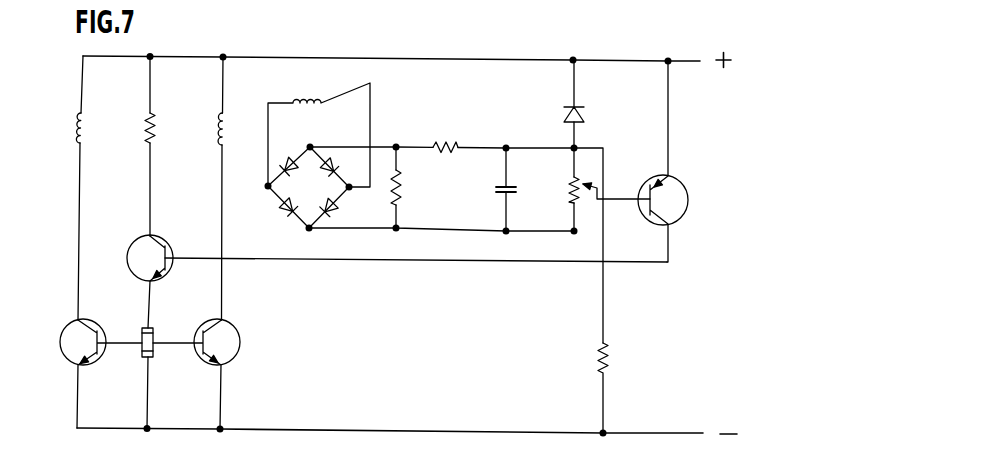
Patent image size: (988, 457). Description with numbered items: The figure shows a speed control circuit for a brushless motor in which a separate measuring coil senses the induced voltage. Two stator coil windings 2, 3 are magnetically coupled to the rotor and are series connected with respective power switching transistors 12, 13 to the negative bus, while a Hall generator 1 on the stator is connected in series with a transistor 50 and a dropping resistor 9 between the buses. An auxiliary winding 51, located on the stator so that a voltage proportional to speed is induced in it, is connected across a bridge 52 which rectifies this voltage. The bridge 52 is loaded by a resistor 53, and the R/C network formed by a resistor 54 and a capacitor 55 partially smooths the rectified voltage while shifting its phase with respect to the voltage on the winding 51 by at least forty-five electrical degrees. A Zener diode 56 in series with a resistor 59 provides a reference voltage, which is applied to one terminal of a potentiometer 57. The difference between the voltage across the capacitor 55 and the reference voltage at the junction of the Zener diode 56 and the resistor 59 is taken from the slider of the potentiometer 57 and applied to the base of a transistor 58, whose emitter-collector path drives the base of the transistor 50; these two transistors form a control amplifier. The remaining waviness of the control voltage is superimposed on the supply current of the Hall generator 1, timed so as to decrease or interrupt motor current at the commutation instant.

The Hall generator 1 is at (153, 350).
The coil winding 2 is at (84, 124).
The coil winding 3 is at (226, 125).
The resistor 9 is at (155, 124).
The power switching transistor 12 is at (68, 343).
The power switching transistor 13 is at (243, 343).
The transistor 50 is at (127, 259).
The auxiliary winding 51 is at (306, 94).
The bridge 52 is at (322, 199).
The resistor 53 is at (401, 187).
The resistor 54 is at (449, 143).
The capacitor 55 is at (497, 190).
The Zener diode 56 is at (585, 113).
The potentiometer 57 is at (566, 182).
The transistor 58 is at (678, 201).
The resistor 59 is at (608, 361).